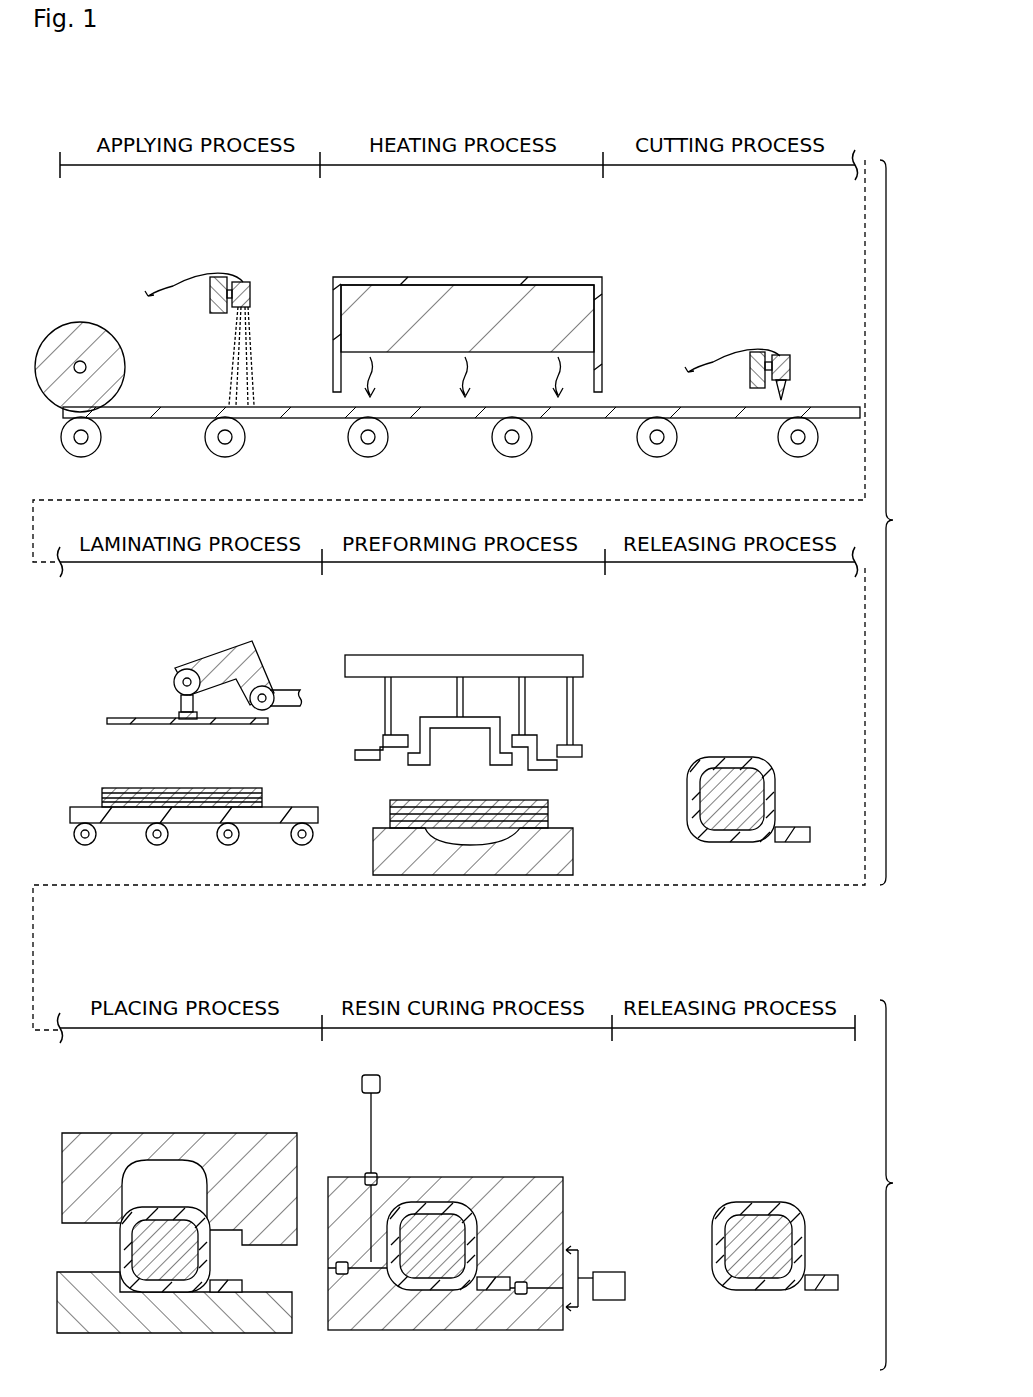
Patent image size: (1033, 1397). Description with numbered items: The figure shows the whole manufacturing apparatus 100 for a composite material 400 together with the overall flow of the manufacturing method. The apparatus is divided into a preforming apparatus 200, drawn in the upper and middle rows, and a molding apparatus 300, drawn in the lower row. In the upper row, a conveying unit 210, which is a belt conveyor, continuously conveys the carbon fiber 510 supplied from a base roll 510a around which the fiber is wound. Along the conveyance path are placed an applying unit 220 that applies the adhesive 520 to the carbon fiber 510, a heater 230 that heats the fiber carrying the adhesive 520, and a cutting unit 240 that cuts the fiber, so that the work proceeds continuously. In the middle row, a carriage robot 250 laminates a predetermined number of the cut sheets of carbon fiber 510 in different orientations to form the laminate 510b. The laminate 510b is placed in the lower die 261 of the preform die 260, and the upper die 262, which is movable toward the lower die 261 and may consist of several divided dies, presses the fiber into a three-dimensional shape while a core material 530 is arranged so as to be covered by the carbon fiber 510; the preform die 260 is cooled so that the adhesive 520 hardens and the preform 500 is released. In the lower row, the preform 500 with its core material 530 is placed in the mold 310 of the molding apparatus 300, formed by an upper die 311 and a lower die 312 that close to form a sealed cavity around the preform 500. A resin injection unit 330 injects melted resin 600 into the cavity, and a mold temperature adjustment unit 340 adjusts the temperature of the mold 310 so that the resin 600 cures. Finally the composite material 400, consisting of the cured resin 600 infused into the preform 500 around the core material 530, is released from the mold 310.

The manufacturing apparatus 100 is at (61, 107).
The preforming apparatus 200 is at (901, 536).
The molding apparatus 300 is at (900, 1201).
The conveying unit 210 is at (151, 419).
The applying unit 220 is at (241, 280).
The heater 230 is at (450, 277).
The cutting unit 240 is at (779, 353).
The carriage robot 250 is at (226, 654).
The preform die 260 is at (464, 673).
The lower die 261 is at (565, 845).
The upper die 262 is at (533, 665).
The mold 310 is at (177, 1214).
The upper die 311 is at (237, 1135).
The lower die 312 is at (261, 1318).
The resin injection unit 330 is at (381, 1082).
The mold temperature adjustment unit 340 is at (612, 1300).
The composite material 400 is at (761, 1205).
The preform 500 is at (739, 757).
The carbon fiber 510 is at (107, 723).
The base roll 510a is at (76, 324).
The laminate 510b is at (550, 805).
The adhesive 520 is at (251, 340).
The core material 530 is at (766, 793).
The resin 600 is at (479, 1205).